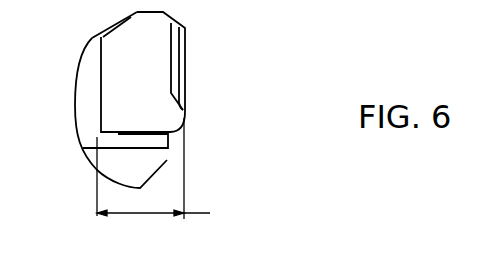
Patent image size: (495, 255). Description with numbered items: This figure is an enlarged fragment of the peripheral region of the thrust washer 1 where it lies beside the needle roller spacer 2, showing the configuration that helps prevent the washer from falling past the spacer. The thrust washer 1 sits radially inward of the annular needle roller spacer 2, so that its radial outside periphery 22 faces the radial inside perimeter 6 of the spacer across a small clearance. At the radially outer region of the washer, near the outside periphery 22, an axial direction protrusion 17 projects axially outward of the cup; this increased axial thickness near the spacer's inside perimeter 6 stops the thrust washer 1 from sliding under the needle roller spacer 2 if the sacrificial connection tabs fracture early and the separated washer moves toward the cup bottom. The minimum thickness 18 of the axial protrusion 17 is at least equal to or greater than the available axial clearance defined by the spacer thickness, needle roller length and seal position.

The thrust washer 1 is at (153, 53).
The needle roller spacer 2 is at (172, 183).
The radial inside perimeter 6 is at (127, 148).
The axial direction protrusion 17 is at (185, 116).
The minimum thickness 18 is at (166, 174).
The radial outside periphery 22 is at (118, 134).